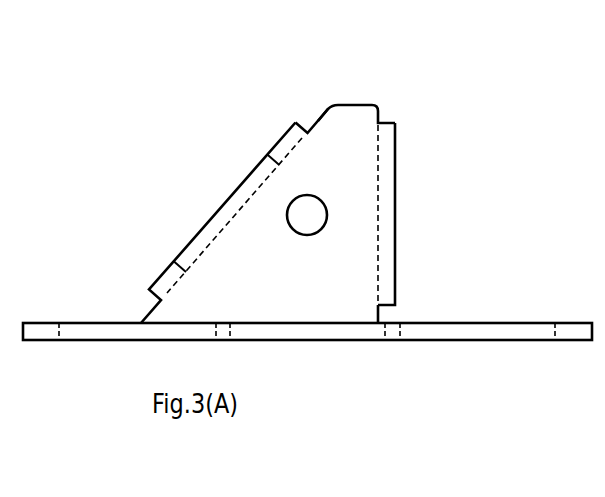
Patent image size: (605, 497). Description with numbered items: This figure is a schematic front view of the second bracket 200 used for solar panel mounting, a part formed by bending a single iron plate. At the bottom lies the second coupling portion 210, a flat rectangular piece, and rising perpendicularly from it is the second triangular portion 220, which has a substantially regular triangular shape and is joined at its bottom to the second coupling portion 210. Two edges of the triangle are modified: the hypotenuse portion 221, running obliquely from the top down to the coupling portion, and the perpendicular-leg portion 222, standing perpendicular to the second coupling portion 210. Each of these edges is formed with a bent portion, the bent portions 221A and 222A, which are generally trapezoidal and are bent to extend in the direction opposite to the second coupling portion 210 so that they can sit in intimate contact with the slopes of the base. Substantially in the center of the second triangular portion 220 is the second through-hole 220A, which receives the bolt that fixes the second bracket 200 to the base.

The second bracket 200 is at (316, 187).
The second coupling portion 210 is at (542, 322).
The second triangular portion 220 is at (348, 125).
The second through-hole 220A is at (310, 213).
The hypotenuse portion 221 is at (318, 121).
The bent portion 221A is at (214, 217).
The perpendicular-leg portion 222 is at (380, 320).
The bent portion 222A is at (395, 183).